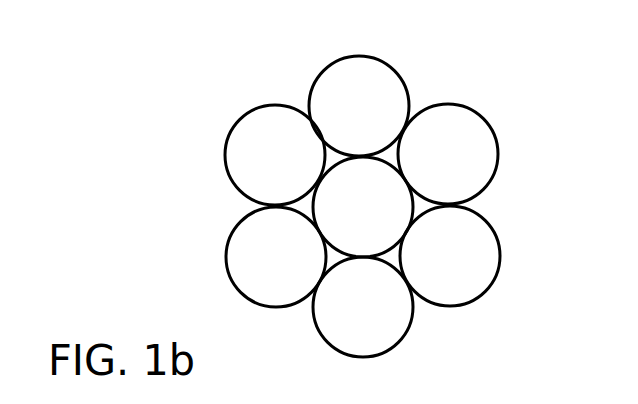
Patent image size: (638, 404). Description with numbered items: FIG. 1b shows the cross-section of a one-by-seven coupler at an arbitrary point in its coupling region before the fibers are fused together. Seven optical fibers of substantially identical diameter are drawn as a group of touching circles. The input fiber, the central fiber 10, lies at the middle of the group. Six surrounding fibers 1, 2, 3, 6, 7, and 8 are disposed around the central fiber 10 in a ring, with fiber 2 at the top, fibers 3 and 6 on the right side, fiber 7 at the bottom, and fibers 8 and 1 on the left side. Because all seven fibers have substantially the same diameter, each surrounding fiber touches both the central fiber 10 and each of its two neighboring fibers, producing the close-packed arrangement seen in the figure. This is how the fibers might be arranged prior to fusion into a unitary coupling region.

The fiber 1 is at (245, 155).
The fiber 2 is at (355, 88).
The fiber 3 is at (452, 127).
The fiber 6 is at (472, 242).
The fiber 7 is at (387, 315).
The fiber 8 is at (248, 270).
The central fiber 10 is at (337, 210).